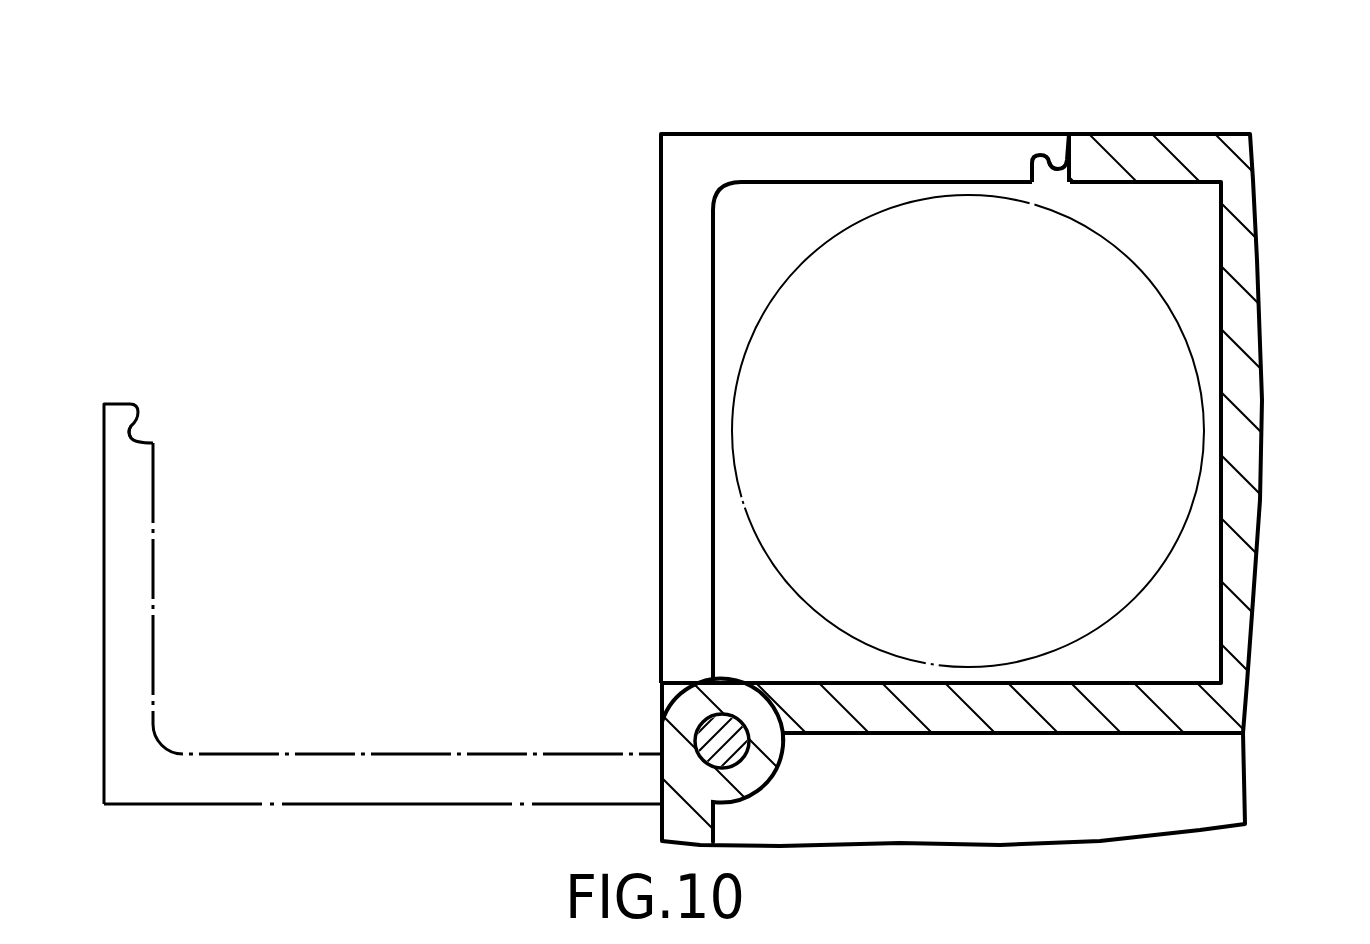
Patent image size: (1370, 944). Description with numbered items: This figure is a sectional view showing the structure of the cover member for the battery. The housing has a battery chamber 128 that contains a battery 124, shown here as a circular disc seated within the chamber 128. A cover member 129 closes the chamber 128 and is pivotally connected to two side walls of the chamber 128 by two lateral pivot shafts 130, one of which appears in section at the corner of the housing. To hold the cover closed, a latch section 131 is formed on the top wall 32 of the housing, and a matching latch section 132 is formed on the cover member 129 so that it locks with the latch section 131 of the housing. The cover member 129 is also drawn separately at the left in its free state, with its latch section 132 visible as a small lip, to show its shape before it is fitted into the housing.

The top wall 32 is at (1165, 134).
The battery 124 is at (830, 240).
The battery chamber 128 is at (1195, 214).
The cover member 129 is at (661, 330).
The pivot shaft 130 is at (698, 720).
The latch section 131 is at (1045, 157).
The latch section 132 is at (1068, 165).